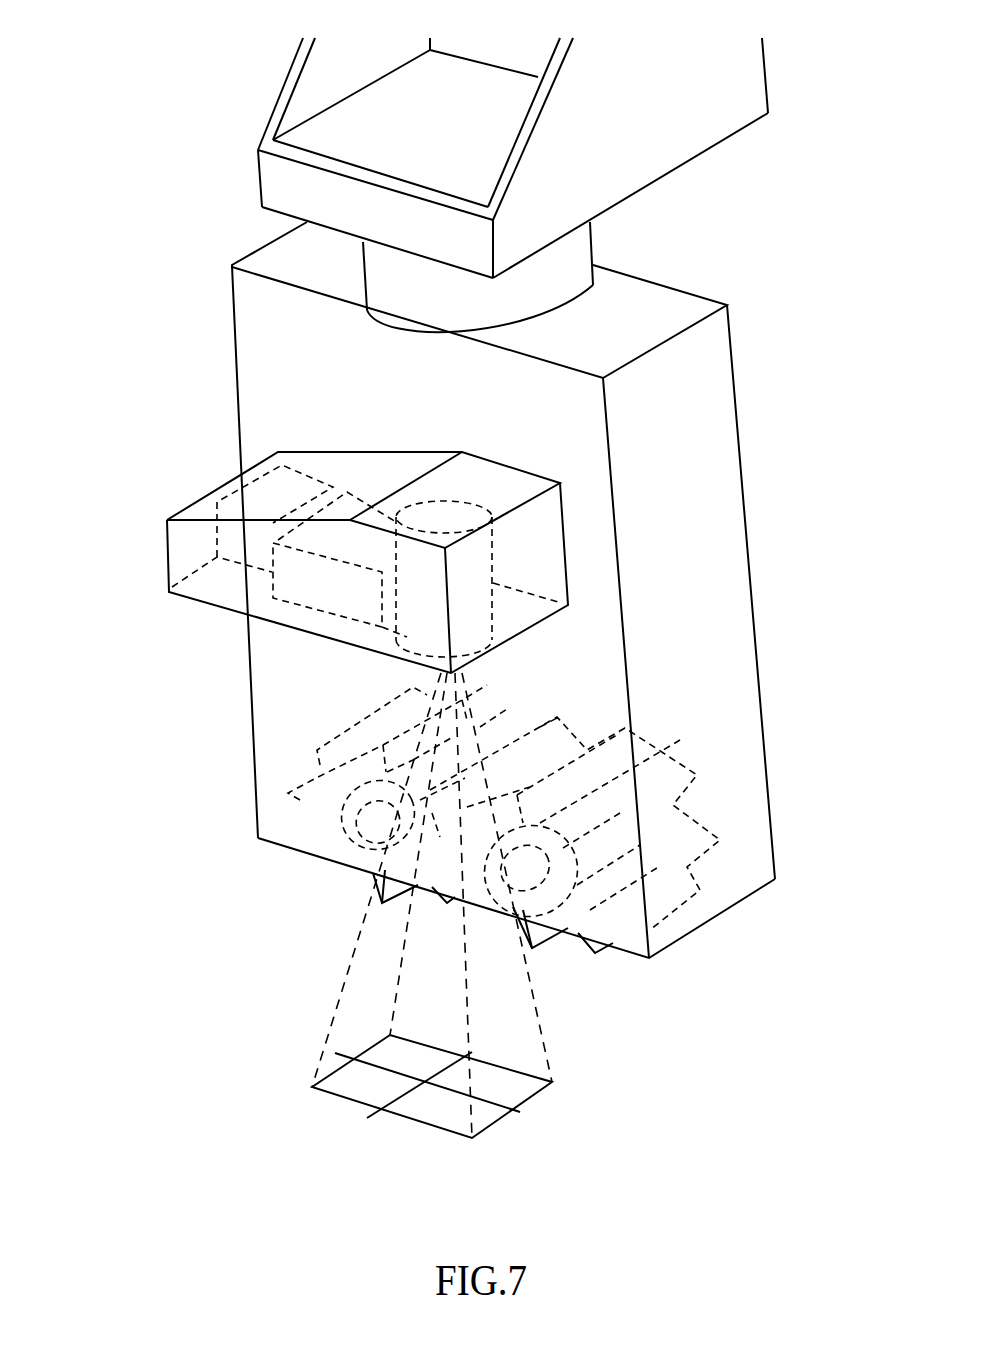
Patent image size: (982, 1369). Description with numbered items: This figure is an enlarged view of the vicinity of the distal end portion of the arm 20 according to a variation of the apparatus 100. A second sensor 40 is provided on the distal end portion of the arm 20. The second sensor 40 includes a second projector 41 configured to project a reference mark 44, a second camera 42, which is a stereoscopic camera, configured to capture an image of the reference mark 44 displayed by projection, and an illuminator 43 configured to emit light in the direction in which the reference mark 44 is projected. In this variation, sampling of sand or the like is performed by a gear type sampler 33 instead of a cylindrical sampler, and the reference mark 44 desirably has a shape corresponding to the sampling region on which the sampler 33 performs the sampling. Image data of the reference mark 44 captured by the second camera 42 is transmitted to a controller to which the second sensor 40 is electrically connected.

The substrate processing apparatus 100 is at (168, 128).
The arm 20 is at (690, 143).
The second sensor 40 is at (207, 492).
The second projector 41 is at (407, 613).
The second camera 42 is at (318, 590).
The illuminator 43 is at (242, 563).
The gear type sampler 33 is at (608, 958).
The reference mark 44 is at (497, 1123).